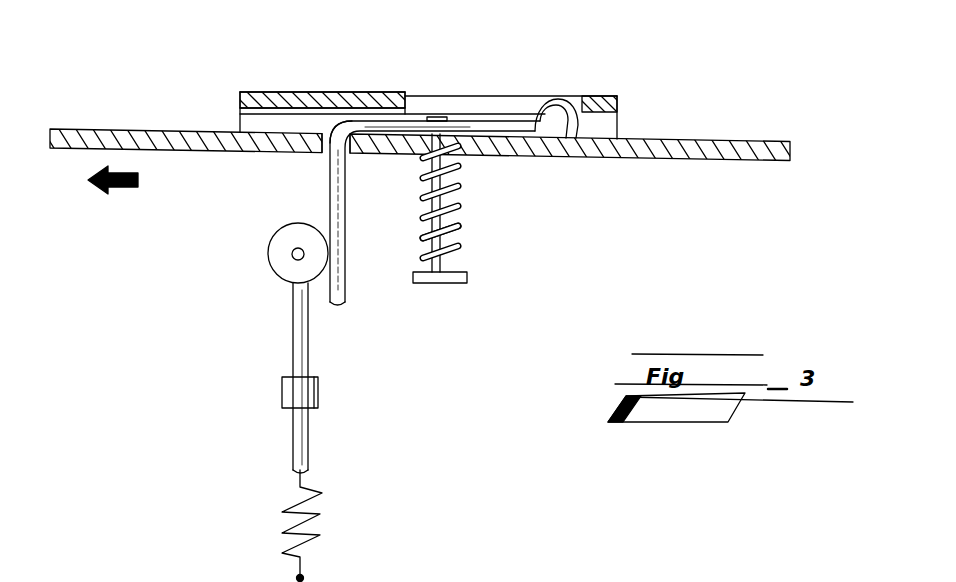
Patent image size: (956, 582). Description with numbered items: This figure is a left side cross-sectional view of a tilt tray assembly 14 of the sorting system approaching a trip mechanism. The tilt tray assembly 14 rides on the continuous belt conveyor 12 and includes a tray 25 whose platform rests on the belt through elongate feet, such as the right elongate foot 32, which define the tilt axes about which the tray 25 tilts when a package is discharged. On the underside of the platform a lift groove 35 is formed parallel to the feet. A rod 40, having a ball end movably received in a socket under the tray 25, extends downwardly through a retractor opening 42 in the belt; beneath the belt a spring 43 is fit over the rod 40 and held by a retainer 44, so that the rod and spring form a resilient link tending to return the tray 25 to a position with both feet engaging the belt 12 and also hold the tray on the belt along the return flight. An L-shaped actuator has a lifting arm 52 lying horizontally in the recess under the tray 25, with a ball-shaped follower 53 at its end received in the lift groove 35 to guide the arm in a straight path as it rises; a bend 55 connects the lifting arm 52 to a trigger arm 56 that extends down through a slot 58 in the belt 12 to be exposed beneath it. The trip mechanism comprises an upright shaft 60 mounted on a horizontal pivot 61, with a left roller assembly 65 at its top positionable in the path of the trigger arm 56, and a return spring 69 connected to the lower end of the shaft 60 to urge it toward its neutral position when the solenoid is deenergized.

The continuous belt conveyor 12 is at (147, 129).
The tilt tray assembly 14 is at (541, 215).
The tray 25 is at (337, 93).
The right elongate foot 32 is at (240, 117).
The left lift groove 35 is at (448, 96).
The rod 40 is at (432, 253).
The retractor opening 42 is at (480, 153).
The spring 43 is at (458, 240).
The retainer 44 is at (443, 285).
The lifting arm 52 is at (507, 153).
The ball-shaped follower 53 is at (553, 97).
The bend 55 is at (364, 149).
The trigger arm 56 is at (337, 210).
The slot 58 is at (328, 160).
The upright shaft 60 is at (300, 322).
The horizontal pivot 61 is at (282, 397).
The left roller assembly 65 is at (270, 263).
The return spring 69 is at (293, 503).